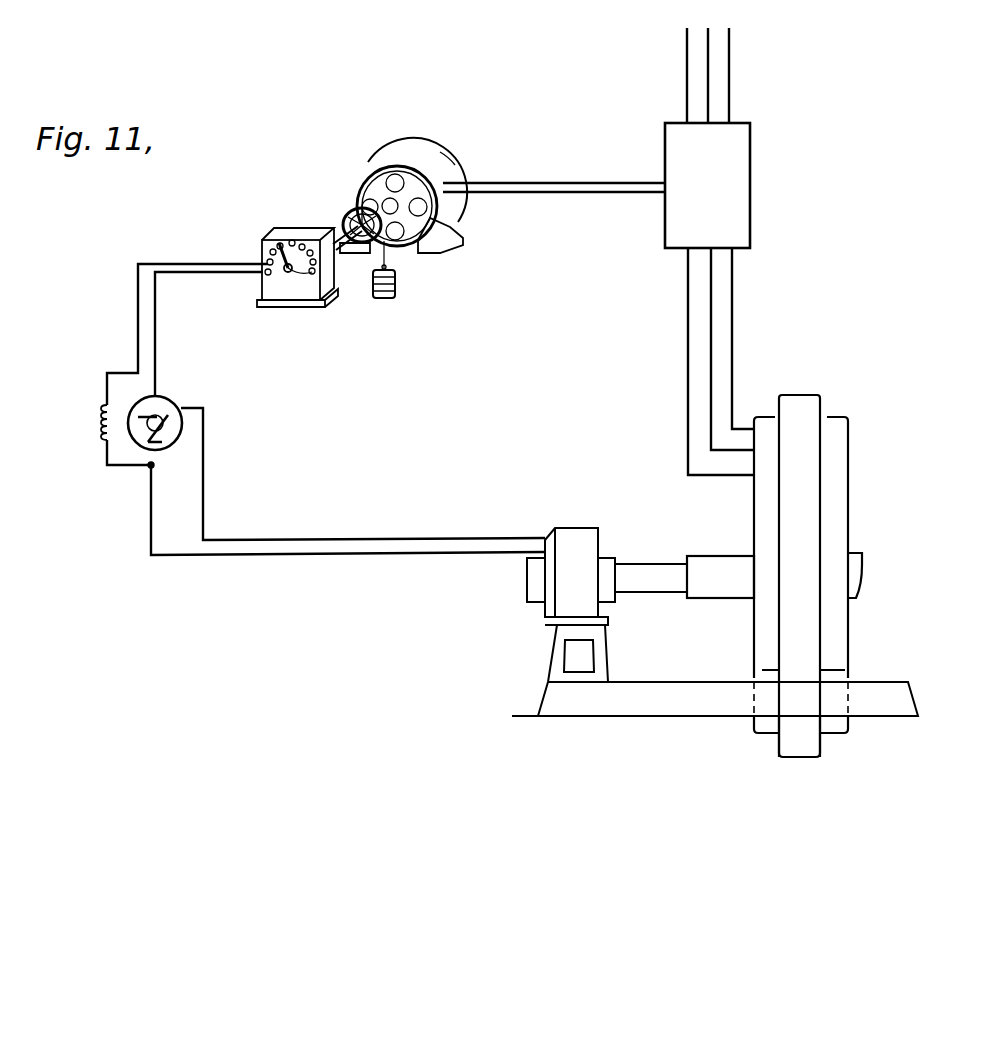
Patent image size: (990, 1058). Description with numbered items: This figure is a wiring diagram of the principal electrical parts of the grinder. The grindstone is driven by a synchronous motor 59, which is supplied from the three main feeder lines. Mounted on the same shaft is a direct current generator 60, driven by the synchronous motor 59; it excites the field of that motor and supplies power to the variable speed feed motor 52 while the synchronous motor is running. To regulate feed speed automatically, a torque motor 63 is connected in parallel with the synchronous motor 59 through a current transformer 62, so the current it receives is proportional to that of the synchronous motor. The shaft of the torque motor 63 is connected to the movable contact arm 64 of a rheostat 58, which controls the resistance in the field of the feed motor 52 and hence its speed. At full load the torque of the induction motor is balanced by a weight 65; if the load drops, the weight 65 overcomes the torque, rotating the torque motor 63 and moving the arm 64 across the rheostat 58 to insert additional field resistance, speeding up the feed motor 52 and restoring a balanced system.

The variable speed feed motor 52 is at (160, 452).
The rheostat 58 is at (298, 308).
The synchronous motor 59 is at (815, 393).
The direct current generator 60 is at (545, 610).
The current transformer 62 is at (751, 212).
The torque motor 63 is at (445, 173).
The movable contact arm 64 is at (303, 273).
The weight 65 is at (395, 292).